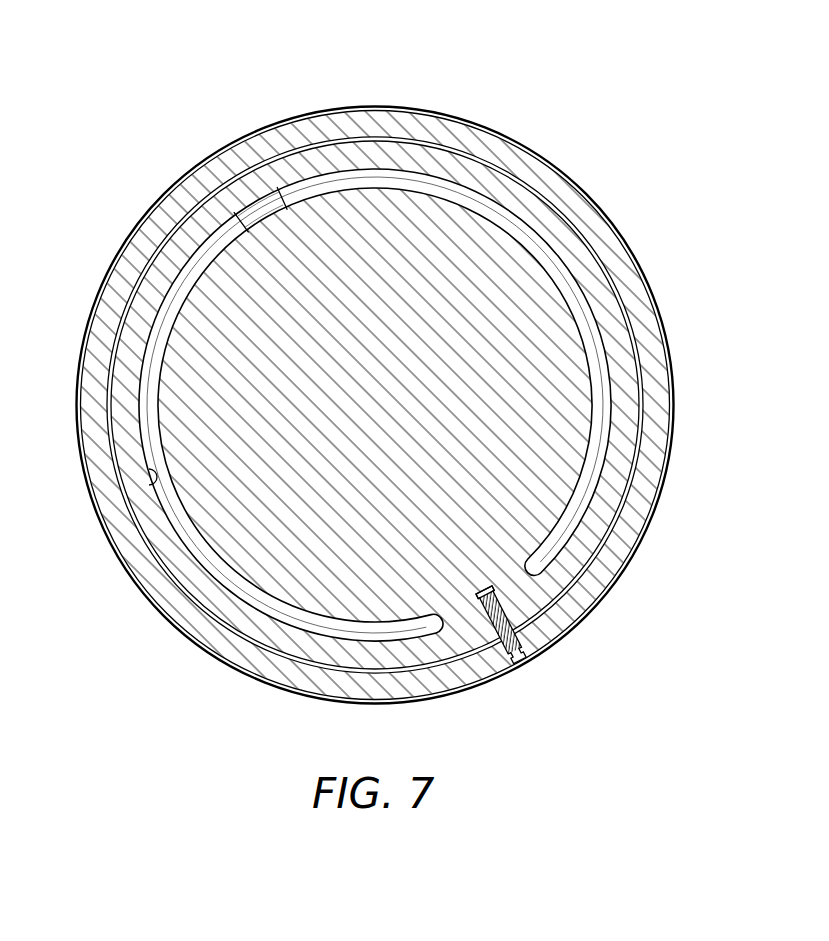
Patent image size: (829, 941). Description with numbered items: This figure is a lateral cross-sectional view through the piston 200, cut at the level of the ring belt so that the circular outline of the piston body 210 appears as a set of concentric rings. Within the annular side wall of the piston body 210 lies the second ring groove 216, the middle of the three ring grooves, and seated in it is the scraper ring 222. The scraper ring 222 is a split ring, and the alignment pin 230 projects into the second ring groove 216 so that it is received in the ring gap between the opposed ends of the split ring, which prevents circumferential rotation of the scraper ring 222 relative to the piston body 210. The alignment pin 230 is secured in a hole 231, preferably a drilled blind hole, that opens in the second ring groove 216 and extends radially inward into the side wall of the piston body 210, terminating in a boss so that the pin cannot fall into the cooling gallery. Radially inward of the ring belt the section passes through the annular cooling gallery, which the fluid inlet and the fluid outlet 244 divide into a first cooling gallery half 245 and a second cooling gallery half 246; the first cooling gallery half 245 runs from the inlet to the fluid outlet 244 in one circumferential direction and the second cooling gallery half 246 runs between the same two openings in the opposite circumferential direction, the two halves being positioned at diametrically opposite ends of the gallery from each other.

The piston 200 is at (506, 68).
The piston body 210 is at (508, 273).
The second ring groove 216 is at (632, 466).
The scraper ring 222 is at (618, 555).
The alignment pin 230 is at (495, 621).
The hole 231 is at (469, 568).
The fluid outlet 244 is at (262, 207).
The first cooling gallery half 245 is at (172, 520).
The second cooling gallery half 246 is at (577, 297).